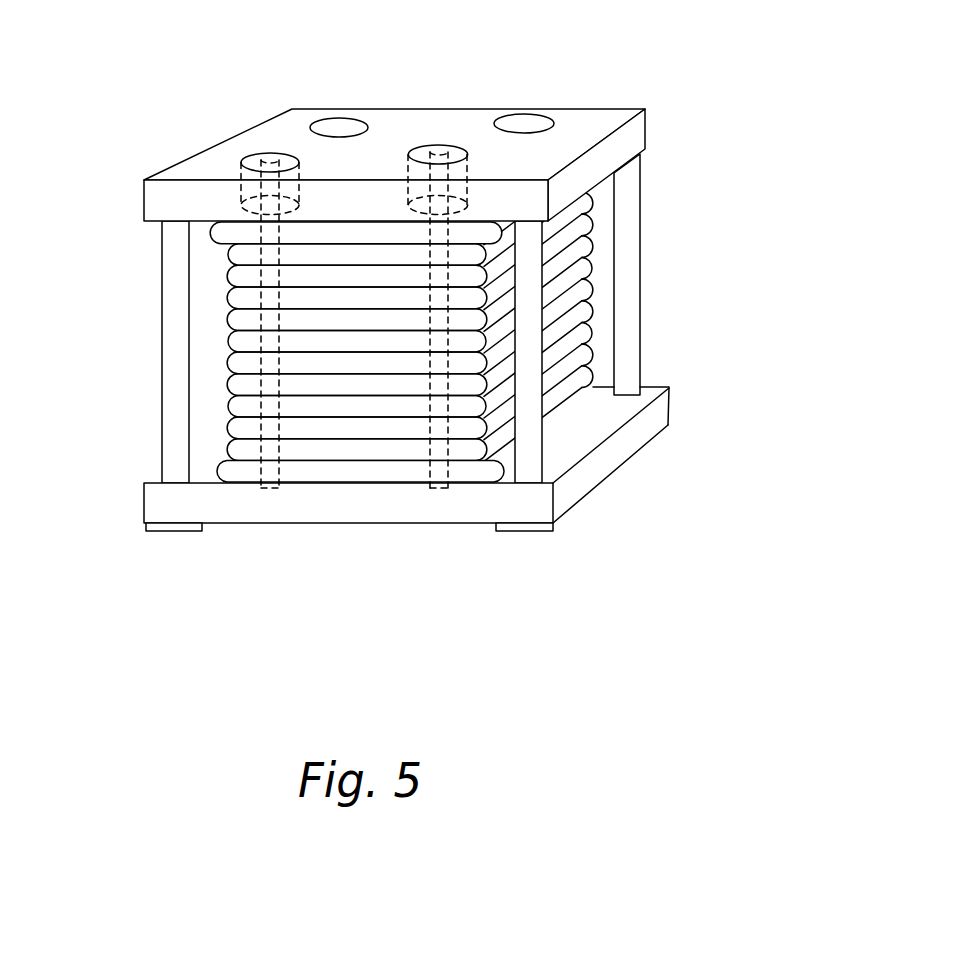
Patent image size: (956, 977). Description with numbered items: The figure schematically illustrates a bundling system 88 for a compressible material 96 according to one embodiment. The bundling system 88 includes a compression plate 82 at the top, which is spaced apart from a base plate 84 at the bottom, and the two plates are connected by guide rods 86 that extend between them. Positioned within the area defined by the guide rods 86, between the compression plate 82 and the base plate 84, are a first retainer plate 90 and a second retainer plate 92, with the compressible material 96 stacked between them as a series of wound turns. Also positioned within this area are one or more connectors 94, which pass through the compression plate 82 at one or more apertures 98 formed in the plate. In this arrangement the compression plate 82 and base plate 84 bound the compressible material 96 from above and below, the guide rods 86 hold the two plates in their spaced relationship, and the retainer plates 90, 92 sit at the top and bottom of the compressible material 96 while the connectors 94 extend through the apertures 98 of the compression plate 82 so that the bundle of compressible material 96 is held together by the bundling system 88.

The compression plate 82 is at (460, 108).
The base plate 84 is at (318, 523).
The guide rods 86 is at (533, 463).
The bundling system 88 is at (698, 246).
The first retainer plate 90 is at (221, 233).
The second retainer plate 92 is at (228, 466).
The connectors 94 is at (285, 160).
The compressible material 96 is at (218, 338).
The apertures 98 is at (262, 157).